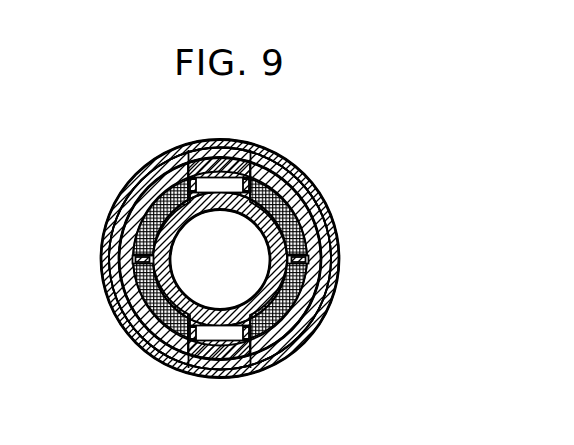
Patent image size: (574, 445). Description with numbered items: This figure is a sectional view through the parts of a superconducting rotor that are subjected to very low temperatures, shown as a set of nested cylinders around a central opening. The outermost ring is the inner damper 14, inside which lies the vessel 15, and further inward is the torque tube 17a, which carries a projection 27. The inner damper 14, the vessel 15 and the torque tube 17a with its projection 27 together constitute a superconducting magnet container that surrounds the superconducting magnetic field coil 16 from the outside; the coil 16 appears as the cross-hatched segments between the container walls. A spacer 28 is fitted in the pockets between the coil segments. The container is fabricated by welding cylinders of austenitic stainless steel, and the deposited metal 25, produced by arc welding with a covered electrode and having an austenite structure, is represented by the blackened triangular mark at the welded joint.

The inner damper 14 is at (296, 171).
The vessel 15 is at (312, 289).
The superconducting magnetic field coil 16 is at (152, 203).
The torque tube 17a is at (227, 309).
The deposited metal 25 is at (212, 213).
The projection 27 is at (189, 154).
The spacer 28 is at (222, 185).